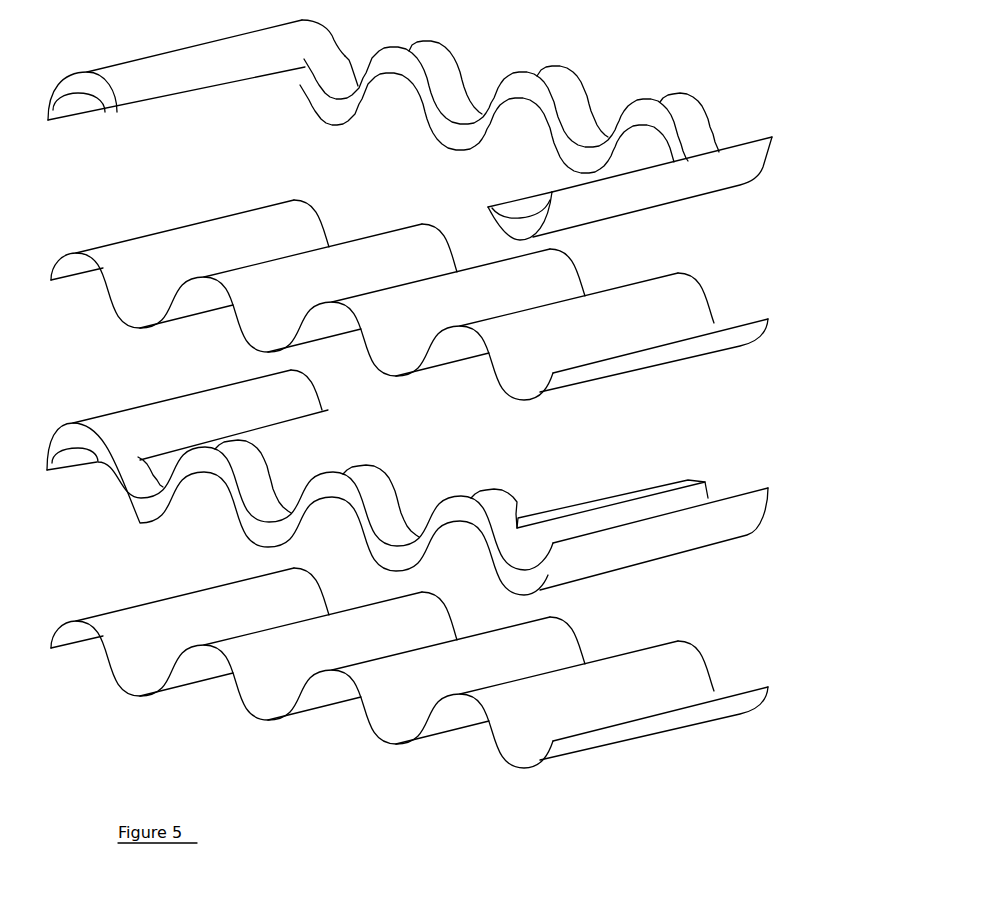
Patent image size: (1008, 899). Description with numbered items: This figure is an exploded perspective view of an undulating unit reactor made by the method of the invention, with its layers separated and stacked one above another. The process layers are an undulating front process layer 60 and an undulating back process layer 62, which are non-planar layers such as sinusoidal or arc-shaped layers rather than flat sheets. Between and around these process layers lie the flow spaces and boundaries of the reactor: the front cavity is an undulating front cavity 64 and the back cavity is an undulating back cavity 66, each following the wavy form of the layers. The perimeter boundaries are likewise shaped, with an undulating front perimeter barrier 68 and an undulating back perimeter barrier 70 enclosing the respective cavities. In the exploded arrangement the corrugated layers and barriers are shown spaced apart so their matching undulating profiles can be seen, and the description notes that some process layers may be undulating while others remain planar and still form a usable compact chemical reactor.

The undulating front process layer 60 is at (697, 347).
The undulating back process layer 62 is at (697, 715).
The undulating front cavity 64 is at (560, 125).
The undulating back cavity 66 is at (648, 485).
The undulating front perimeter barrier 68 is at (703, 515).
The undulating back perimeter barrier 70 is at (690, 180).